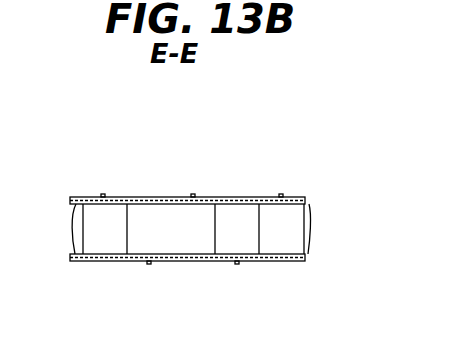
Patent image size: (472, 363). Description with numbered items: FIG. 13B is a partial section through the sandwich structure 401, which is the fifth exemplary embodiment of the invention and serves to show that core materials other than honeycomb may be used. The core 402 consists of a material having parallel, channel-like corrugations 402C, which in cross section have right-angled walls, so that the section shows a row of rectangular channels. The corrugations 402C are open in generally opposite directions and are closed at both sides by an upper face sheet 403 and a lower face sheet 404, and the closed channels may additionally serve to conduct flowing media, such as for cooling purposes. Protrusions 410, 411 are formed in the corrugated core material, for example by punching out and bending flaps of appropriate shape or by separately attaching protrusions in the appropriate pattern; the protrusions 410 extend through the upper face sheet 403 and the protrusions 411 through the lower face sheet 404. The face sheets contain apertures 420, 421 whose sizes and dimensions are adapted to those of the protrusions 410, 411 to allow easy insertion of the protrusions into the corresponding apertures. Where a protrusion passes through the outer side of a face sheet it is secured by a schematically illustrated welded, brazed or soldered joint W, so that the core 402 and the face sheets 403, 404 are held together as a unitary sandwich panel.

The sandwich structure 401 is at (96, 183).
The core 402 is at (125, 223).
The corrugation 402C is at (194, 229).
The face sheet 403 is at (163, 199).
The face sheet 404 is at (293, 260).
The protrusion 410 is at (278, 199).
The protrusion 411 is at (238, 262).
The aperture 420 is at (197, 199).
The aperture 421 is at (145, 261).
The welded, brazed or soldered joint W is at (107, 198).